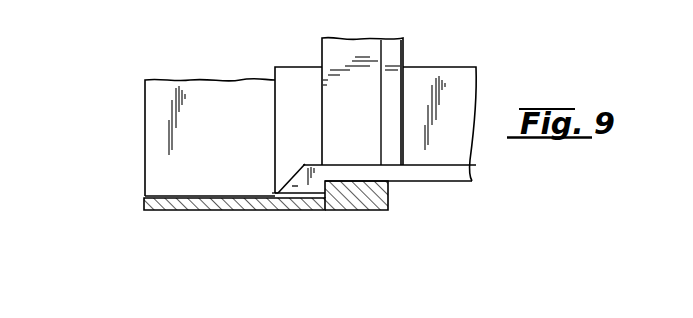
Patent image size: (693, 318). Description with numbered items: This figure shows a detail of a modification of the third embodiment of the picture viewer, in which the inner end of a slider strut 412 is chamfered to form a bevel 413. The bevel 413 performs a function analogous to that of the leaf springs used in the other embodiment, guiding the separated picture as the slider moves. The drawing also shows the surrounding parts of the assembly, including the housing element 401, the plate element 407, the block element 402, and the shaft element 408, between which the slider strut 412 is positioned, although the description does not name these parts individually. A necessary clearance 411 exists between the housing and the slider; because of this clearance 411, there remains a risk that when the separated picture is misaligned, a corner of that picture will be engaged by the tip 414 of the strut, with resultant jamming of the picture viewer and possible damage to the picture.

The housing block 401 is at (143, 135).
The hatched support plate 407 is at (156, 194).
The hatched mounting block 402 is at (410, 186).
The shaft 408 is at (323, 54).
The clearance 411 is at (273, 193).
The slider strut 412 is at (443, 173).
The bevel 413 is at (293, 177).
The tip 414 is at (295, 187).